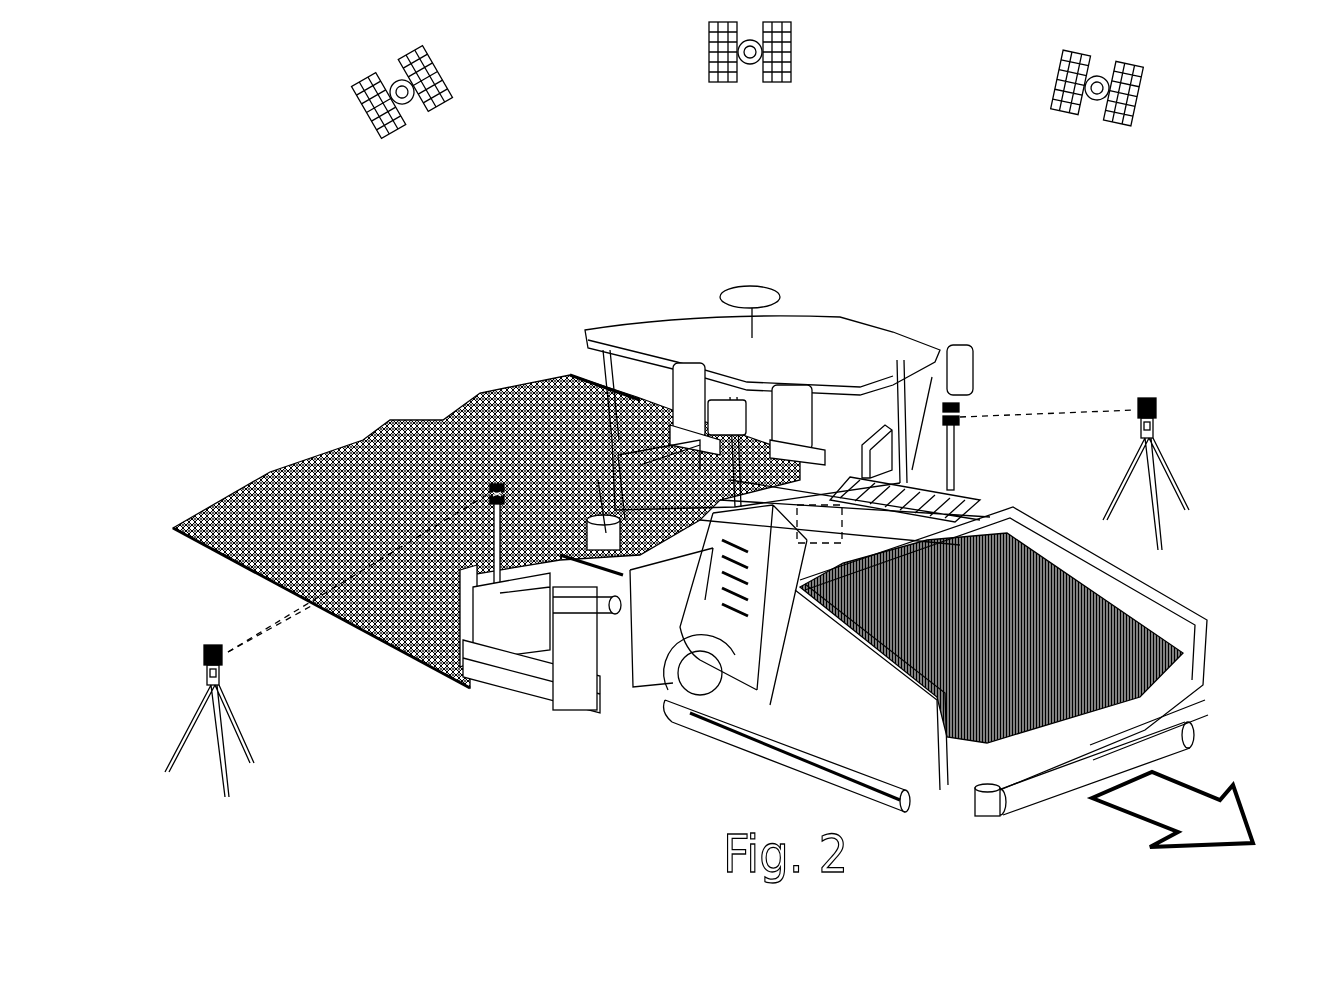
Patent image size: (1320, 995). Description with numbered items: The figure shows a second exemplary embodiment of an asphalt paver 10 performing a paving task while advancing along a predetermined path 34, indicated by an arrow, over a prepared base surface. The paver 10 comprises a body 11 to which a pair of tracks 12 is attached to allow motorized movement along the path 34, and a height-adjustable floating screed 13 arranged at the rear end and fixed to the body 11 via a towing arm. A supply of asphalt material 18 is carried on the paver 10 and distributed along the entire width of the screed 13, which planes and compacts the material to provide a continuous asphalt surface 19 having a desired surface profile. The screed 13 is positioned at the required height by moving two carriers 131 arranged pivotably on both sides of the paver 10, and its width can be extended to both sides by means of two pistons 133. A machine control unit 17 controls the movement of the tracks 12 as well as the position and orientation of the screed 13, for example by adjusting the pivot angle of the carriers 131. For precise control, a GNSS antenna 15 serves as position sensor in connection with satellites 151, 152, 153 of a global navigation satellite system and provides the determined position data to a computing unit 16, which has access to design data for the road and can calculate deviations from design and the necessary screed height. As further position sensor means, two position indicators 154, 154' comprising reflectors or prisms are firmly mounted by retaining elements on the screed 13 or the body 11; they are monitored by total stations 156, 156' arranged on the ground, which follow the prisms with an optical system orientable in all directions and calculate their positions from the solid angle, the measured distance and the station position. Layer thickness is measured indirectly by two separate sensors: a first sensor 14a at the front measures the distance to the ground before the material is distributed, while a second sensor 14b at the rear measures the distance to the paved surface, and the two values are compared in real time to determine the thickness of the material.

The asphalt paver 10 is at (1018, 331).
The body 11 is at (970, 506).
The tracks 12 is at (846, 795).
The floating screed 13 is at (608, 657).
The carriers 131 is at (673, 625).
The pistons 133 is at (573, 610).
The first sensor 14a is at (990, 800).
The second sensor 14b is at (598, 480).
The GNSS antenna 15 is at (762, 293).
The computing unit 16 is at (895, 450).
The machine control unit 17 is at (808, 547).
The asphalt material 18 is at (1082, 612).
The asphalt surface 19 is at (410, 651).
The path 34 is at (1192, 819).
The satellite 151 is at (348, 123).
The satellite 152 is at (698, 48).
The satellite 153 is at (1035, 68).
The position indicator 154 is at (383, 508).
The position indicator 154' is at (1009, 433).
The total station 156 is at (274, 721).
The total station 156' is at (1189, 464).